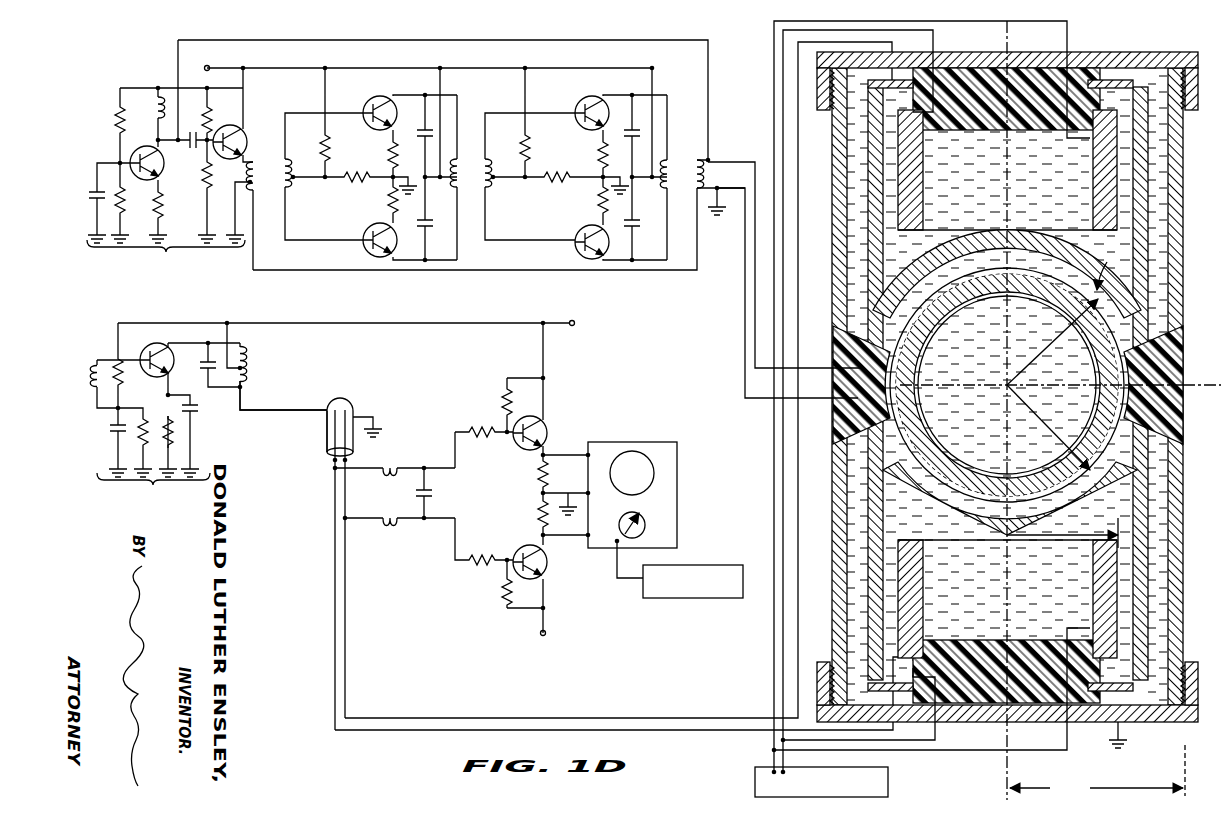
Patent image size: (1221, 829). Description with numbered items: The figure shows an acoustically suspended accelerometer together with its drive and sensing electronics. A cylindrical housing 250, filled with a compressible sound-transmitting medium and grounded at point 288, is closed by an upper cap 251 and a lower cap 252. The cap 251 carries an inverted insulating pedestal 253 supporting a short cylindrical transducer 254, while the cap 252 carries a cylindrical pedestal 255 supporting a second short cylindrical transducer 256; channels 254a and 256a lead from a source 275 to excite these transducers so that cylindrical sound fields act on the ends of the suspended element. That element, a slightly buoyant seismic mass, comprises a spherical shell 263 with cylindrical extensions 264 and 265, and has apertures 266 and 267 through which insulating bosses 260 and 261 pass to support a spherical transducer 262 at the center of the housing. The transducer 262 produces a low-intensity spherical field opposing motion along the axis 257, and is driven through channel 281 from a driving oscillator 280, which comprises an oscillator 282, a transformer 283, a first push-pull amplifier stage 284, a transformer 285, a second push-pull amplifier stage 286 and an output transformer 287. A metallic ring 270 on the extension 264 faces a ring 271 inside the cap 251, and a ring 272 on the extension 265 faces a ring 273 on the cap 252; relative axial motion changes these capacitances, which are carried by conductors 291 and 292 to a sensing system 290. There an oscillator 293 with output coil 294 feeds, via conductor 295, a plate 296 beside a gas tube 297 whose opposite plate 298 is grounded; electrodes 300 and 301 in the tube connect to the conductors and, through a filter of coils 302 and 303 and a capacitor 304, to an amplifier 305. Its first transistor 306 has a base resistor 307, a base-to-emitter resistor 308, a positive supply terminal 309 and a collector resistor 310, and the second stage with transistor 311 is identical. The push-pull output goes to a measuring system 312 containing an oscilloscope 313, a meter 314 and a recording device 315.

The cylindrical housing 250 is at (1180, 298).
The upper cap 251 is at (1123, 54).
The lower cap 252 is at (1155, 722).
The inverted insulating pedestal 253 is at (997, 132).
The short cylindrical transducer 254 is at (1094, 188).
The channel 254a is at (774, 643).
The cylindrical pedestal 255 is at (1003, 640).
The short cylindrical transducer 256 is at (925, 593).
The channel 256a is at (920, 740).
The axis 257 is at (943, 388).
The insulating boss 260 is at (1183, 438).
The insulating boss 261 is at (833, 417).
The spherical transducer 262 is at (1108, 362).
The spherical shell 263 is at (940, 260).
The cylindrical extension 264 is at (868, 188).
The cylindrical extension 265 is at (870, 492).
The aperture 266 is at (873, 423).
The aperture 267 is at (1140, 433).
The metallic ring 270 is at (1153, 72).
The metallic ring 271 is at (891, 80).
The ring 272 is at (900, 657).
The metallic ring 273 is at (1125, 690).
The source 275 is at (888, 785).
The driving oscillator 280 is at (462, 35).
The channel 281 is at (748, 305).
The oscillator 282 is at (170, 162).
The transformer 283 is at (267, 167).
The first push-pull amplifier stage 284 is at (345, 224).
The transformer 285 is at (484, 163).
The second push-pull amplifier stage 286 is at (560, 224).
The output transformer 287 is at (681, 160).
The ground point 288 is at (1105, 744).
The sensing system 290 is at (436, 356).
The conductor 291 is at (674, 718).
The conductor 292 is at (753, 735).
The oscillator 293 is at (208, 415).
The output coil 294 is at (255, 364).
The conductor 295 is at (282, 415).
The plate 296 is at (327, 415).
The gas tube 297 is at (347, 402).
The second plate 298 is at (358, 412).
The electrode 300 is at (334, 460).
The electrode 301 is at (347, 460).
The coil 302 is at (395, 464).
The coil 303 is at (390, 526).
The capacitor 304 is at (434, 494).
The amplifier 305 is at (521, 531).
The first transistor 306 is at (543, 425).
The resistor 307 is at (483, 423).
The resistor 308 is at (502, 400).
The B+ terminal 309 is at (570, 321).
The resistor 310 is at (536, 471).
The transistor 311 is at (545, 573).
The measuring system 312 is at (613, 442).
The oscilloscope 313 is at (654, 470).
The meter 314 is at (645, 524).
The recording device 315 is at (675, 593).